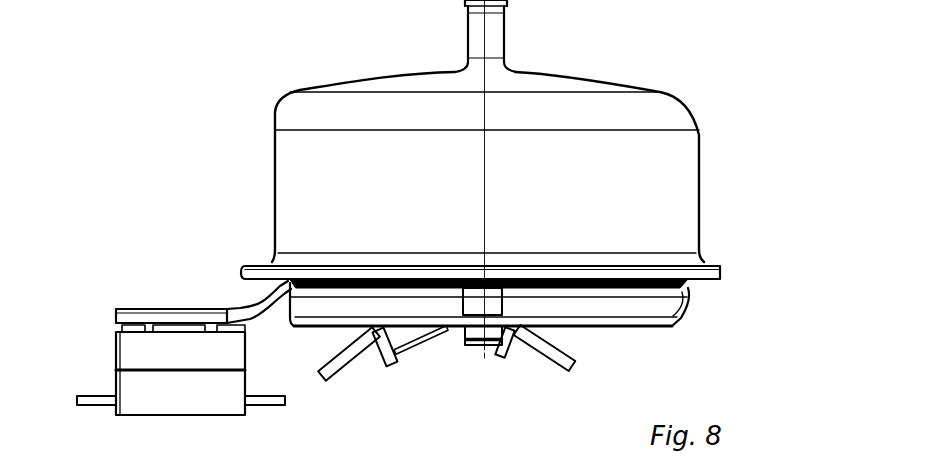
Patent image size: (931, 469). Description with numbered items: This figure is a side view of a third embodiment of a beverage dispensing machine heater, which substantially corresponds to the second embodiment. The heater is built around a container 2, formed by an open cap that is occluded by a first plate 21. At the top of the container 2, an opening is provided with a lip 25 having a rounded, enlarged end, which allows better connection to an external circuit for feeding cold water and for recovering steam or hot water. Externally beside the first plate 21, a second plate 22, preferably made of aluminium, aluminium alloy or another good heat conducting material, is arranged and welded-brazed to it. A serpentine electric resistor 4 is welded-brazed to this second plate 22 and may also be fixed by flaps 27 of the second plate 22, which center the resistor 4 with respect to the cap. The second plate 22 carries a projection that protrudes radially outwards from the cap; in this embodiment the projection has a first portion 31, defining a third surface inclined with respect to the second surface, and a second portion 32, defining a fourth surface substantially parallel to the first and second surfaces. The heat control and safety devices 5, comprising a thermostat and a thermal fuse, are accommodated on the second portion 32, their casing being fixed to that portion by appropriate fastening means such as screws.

The container 2 is at (721, 141).
The lip 25 is at (497, 30).
The first plate 21 is at (720, 268).
The second plate 22 is at (690, 283).
The electric resistor 4 is at (642, 305).
The flaps 27 is at (475, 302).
The heat control and safety devices 5 is at (105, 365).
The first portion 31 is at (267, 300).
The second portion 32 is at (145, 316).